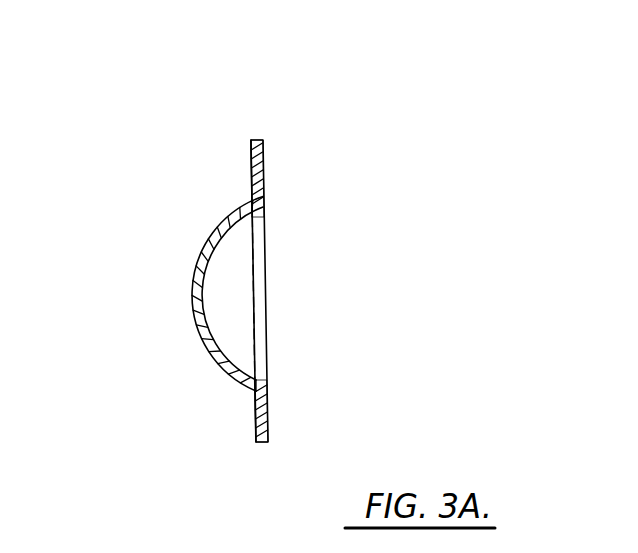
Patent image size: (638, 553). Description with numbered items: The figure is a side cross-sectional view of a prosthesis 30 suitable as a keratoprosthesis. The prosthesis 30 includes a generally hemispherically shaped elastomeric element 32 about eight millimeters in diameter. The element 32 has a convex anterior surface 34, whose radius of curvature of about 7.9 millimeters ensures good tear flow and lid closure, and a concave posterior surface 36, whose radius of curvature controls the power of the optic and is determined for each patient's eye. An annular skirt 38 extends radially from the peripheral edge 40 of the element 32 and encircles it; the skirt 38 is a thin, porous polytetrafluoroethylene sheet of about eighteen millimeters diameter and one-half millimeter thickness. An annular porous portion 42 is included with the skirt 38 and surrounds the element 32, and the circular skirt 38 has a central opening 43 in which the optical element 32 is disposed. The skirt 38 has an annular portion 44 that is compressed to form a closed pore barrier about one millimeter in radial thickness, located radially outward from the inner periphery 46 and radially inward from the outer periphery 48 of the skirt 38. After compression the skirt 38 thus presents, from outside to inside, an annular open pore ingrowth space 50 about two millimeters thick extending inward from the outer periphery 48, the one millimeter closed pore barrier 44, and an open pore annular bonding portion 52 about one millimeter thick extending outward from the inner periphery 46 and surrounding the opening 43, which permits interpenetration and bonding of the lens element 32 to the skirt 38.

The prosthesis 30 is at (234, 299).
The hemispherically shaped element 32 is at (223, 293).
The convex anterior surface 34 is at (208, 323).
The concave posterior surface 36 is at (216, 327).
The annular skirt 38 is at (289, 421).
The peripheral edge 40 is at (251, 193).
The annular porous portion 42 is at (251, 149).
The central opening 43 is at (268, 372).
The annular portion 44 is at (263, 169).
The inner periphery 46 is at (264, 213).
The outer periphery 48 is at (257, 140).
The annular open pore ingrowth space 50 is at (263, 149).
The open pore annular bonding portion 52 is at (263, 191).